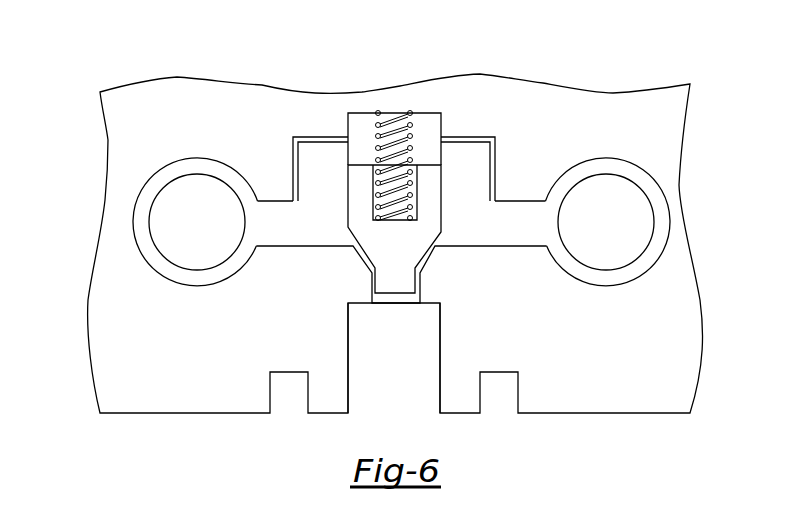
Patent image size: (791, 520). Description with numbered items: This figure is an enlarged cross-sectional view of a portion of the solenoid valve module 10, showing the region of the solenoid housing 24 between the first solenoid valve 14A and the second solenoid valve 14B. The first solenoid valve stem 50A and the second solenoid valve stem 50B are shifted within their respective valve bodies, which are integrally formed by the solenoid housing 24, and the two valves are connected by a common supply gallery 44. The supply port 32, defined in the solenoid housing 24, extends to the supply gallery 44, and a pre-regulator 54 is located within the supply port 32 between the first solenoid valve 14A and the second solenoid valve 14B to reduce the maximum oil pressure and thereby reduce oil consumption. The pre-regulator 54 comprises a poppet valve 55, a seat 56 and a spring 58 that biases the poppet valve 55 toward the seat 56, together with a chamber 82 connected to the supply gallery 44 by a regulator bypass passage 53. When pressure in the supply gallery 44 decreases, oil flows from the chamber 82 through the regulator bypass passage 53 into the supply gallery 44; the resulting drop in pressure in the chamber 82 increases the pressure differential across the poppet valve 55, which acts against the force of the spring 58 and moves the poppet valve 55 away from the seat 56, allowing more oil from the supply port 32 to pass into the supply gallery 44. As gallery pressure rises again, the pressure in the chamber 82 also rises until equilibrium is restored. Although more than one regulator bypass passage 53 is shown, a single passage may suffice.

The solenoid valve module 10 is at (361, 214).
The solenoid housing 24 is at (195, 88).
The first solenoid valve 14A is at (138, 215).
The second solenoid valve 14B is at (657, 177).
The first solenoid valve stem 50A is at (141, 206).
The second solenoid valve stem 50B is at (655, 206).
The supply gallery 44 is at (190, 287).
The regulator bypass passage 53 is at (327, 137).
The pre-regulator 54 is at (301, 274).
The poppet valve 55 is at (423, 233).
The seat 56 is at (430, 263).
The spring 58 is at (397, 125).
The chamber 82 is at (427, 127).
The supply port 32 is at (405, 364).